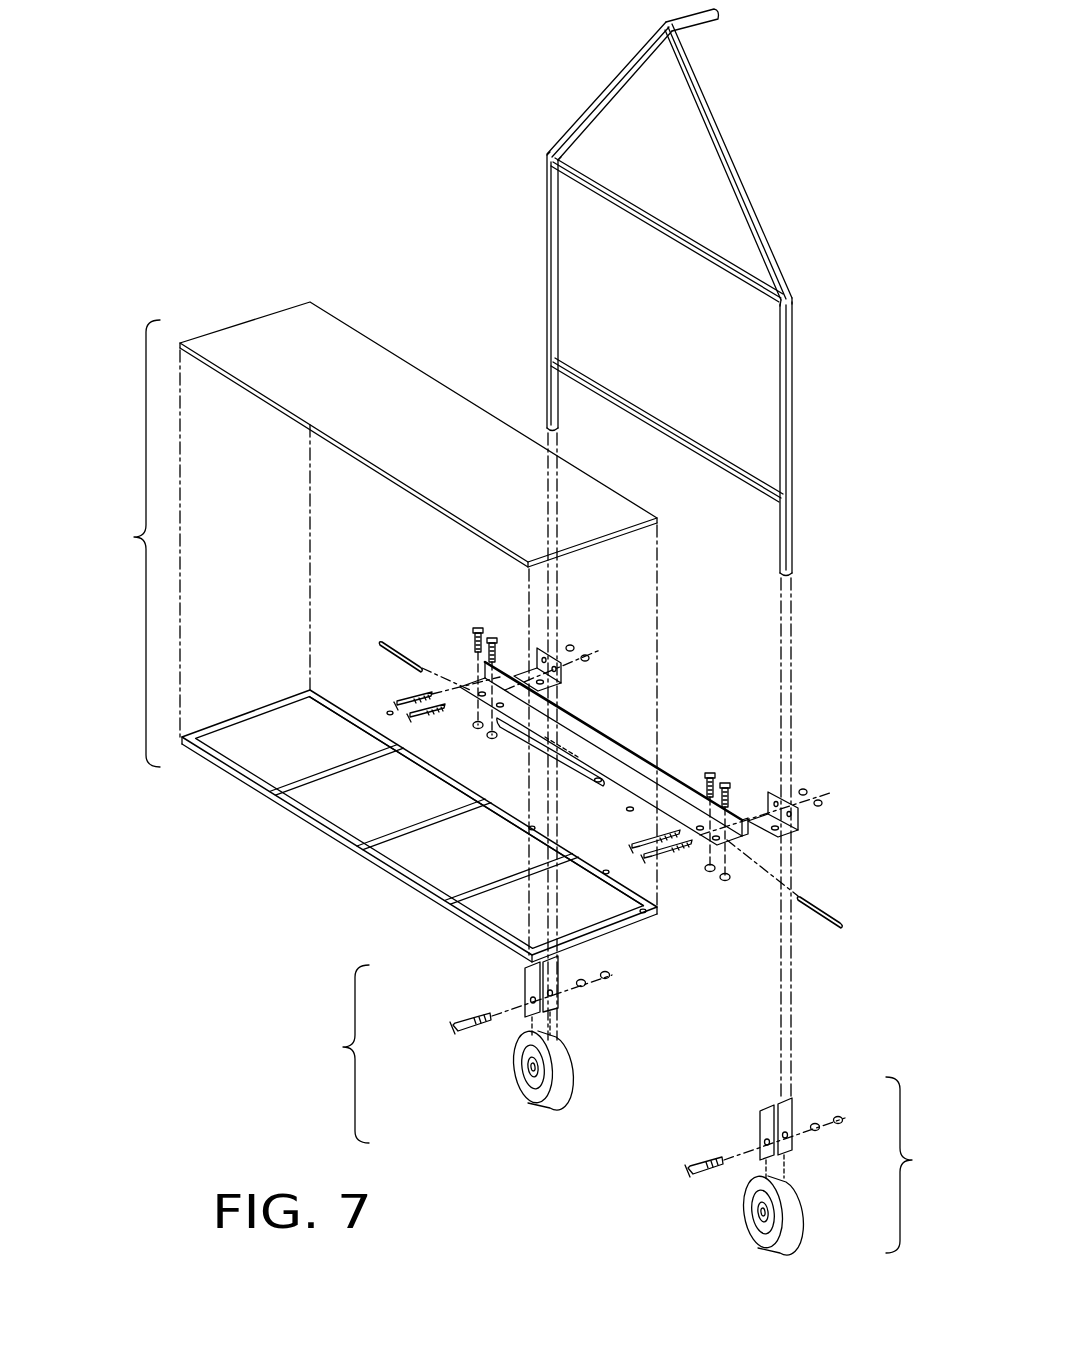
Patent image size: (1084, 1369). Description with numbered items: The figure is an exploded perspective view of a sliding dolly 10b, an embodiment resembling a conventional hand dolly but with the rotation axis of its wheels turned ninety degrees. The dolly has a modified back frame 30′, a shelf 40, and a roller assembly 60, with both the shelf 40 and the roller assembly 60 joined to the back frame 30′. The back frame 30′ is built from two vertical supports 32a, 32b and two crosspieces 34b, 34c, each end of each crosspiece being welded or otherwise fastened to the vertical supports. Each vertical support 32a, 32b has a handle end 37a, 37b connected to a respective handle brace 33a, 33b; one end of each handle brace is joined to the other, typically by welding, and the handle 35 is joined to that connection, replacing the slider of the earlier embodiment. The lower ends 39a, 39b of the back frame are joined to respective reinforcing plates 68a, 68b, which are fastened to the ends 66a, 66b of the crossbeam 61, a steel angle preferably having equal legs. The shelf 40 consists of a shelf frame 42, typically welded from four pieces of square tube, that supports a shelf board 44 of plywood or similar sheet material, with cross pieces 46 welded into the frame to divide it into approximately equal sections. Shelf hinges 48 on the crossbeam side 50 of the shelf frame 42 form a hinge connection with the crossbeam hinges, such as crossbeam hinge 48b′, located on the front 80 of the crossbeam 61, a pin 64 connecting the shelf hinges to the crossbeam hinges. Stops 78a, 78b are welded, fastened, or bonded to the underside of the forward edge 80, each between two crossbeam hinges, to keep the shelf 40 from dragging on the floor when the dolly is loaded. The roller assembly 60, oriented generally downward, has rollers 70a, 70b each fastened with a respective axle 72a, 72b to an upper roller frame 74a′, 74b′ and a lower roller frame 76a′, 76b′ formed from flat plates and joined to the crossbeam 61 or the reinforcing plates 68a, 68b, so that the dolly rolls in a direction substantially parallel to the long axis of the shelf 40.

The sliding dolly 10b is at (818, 157).
The back frame 30′ is at (795, 425).
The vertical support 32a is at (793, 366).
The vertical support 32b is at (558, 256).
The handle brace 33a is at (716, 128).
The handle brace 33b is at (610, 80).
The crosspiece 34b is at (635, 208).
The crosspiece 34c is at (646, 414).
The handle 35 is at (703, 30).
The handle end 37a is at (793, 303).
The handle end 37b is at (547, 155).
The lower end 39a is at (793, 548).
The lower end 39b is at (561, 420).
The shelf 40 is at (134, 537).
The shelf frame 42 is at (322, 826).
The shelf board 44 is at (280, 312).
The cross piece 46 is at (312, 775).
The shelf hinge 48 is at (388, 712).
The crossbeam hinge 48b′ is at (728, 878).
The crossbeam side 50 is at (372, 733).
The roller assembly 60 is at (343, 1047).
The crossbeam 61 is at (690, 780).
The pin 64 is at (388, 640).
The end of crossbeam 66a is at (742, 815).
The end of crossbeam 66b is at (508, 673).
The reinforcement plate 68a is at (798, 826).
The reinforcement plate 68b is at (562, 682).
The roller 70a is at (800, 1215).
The roller 70b is at (570, 1070).
The axle 72a is at (690, 1172).
The axle 72b is at (455, 1030).
The upper roller frame 74a′ is at (760, 1135).
The upper roller frame 74b′ is at (528, 990).
The lower roller frame 76a′ is at (795, 1140).
The lower roller frame 76b′ is at (548, 998).
The stop 78a is at (628, 808).
The stop 78b is at (490, 740).
The front of crossbeam 80 is at (673, 776).